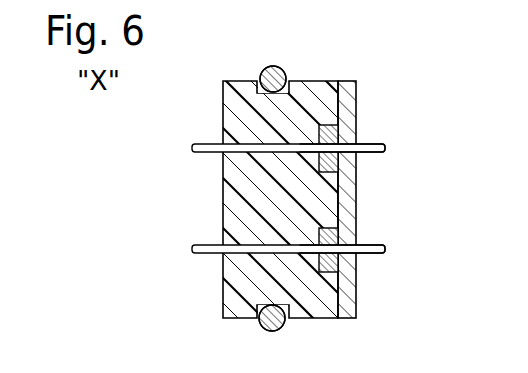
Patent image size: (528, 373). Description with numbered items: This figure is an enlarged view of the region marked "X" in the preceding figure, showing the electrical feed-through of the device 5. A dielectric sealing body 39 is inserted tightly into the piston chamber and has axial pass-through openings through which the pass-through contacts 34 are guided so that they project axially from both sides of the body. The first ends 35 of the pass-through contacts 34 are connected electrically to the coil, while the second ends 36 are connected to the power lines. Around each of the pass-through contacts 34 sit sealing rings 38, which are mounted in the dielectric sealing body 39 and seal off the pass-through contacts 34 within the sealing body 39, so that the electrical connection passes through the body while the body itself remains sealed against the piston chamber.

The device 5 is at (482, 372).
The pass-through contacts 34 is at (304, 145).
The first ends 35 is at (190, 148).
The second ends 36 is at (387, 148).
The sealing rings 38 is at (336, 163).
The dielectric sealing body 39 is at (253, 200).